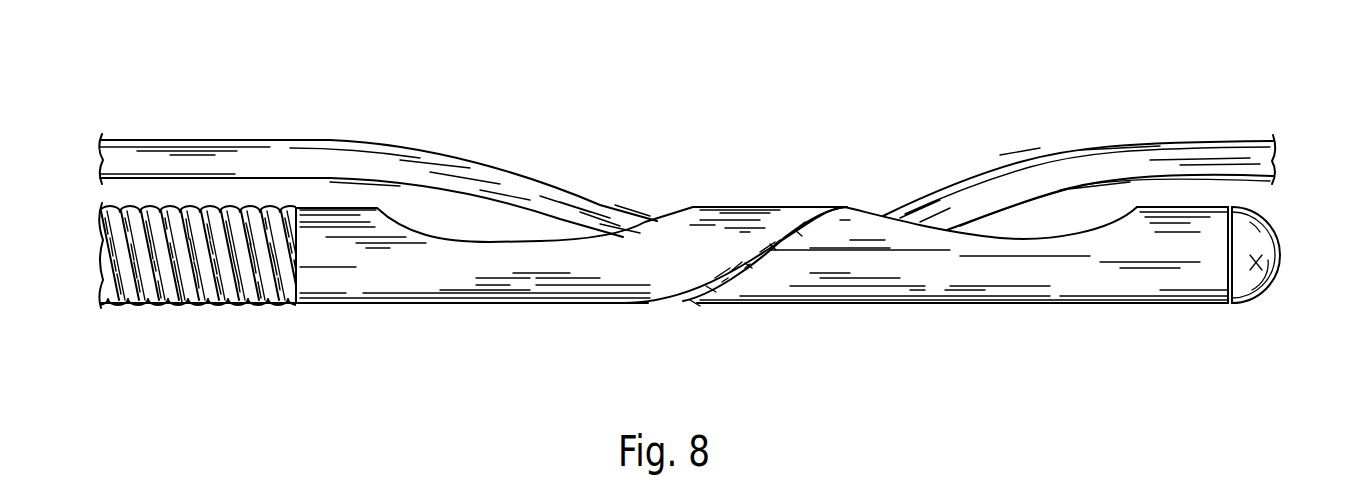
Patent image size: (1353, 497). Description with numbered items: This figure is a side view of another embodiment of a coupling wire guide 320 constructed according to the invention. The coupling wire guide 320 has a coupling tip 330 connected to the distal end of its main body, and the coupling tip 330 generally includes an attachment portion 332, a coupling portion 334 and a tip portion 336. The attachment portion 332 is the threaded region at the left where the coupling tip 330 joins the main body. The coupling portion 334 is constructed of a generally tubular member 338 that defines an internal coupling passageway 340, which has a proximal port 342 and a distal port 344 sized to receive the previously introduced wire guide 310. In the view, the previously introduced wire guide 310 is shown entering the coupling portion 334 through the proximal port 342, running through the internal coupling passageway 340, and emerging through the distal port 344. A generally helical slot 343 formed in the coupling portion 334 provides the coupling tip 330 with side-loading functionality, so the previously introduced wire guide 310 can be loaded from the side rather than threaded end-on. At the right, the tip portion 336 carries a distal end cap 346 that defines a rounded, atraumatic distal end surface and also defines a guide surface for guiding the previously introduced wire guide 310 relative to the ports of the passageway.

The coupling wire guide 320 is at (213, 72).
The previously introduced wire guide 310 is at (258, 165).
The coupling tip 330 is at (622, 122).
The attachment portion 332 is at (355, 305).
The coupling portion 334 is at (790, 305).
The tip portion 336 is at (1166, 305).
The tubular member 338 is at (702, 247).
The internal coupling passageway 340 is at (692, 297).
The proximal port 342 is at (423, 233).
The helical slot 343 is at (788, 245).
The distal port 344 is at (1087, 230).
The distal end cap 346 is at (1270, 278).